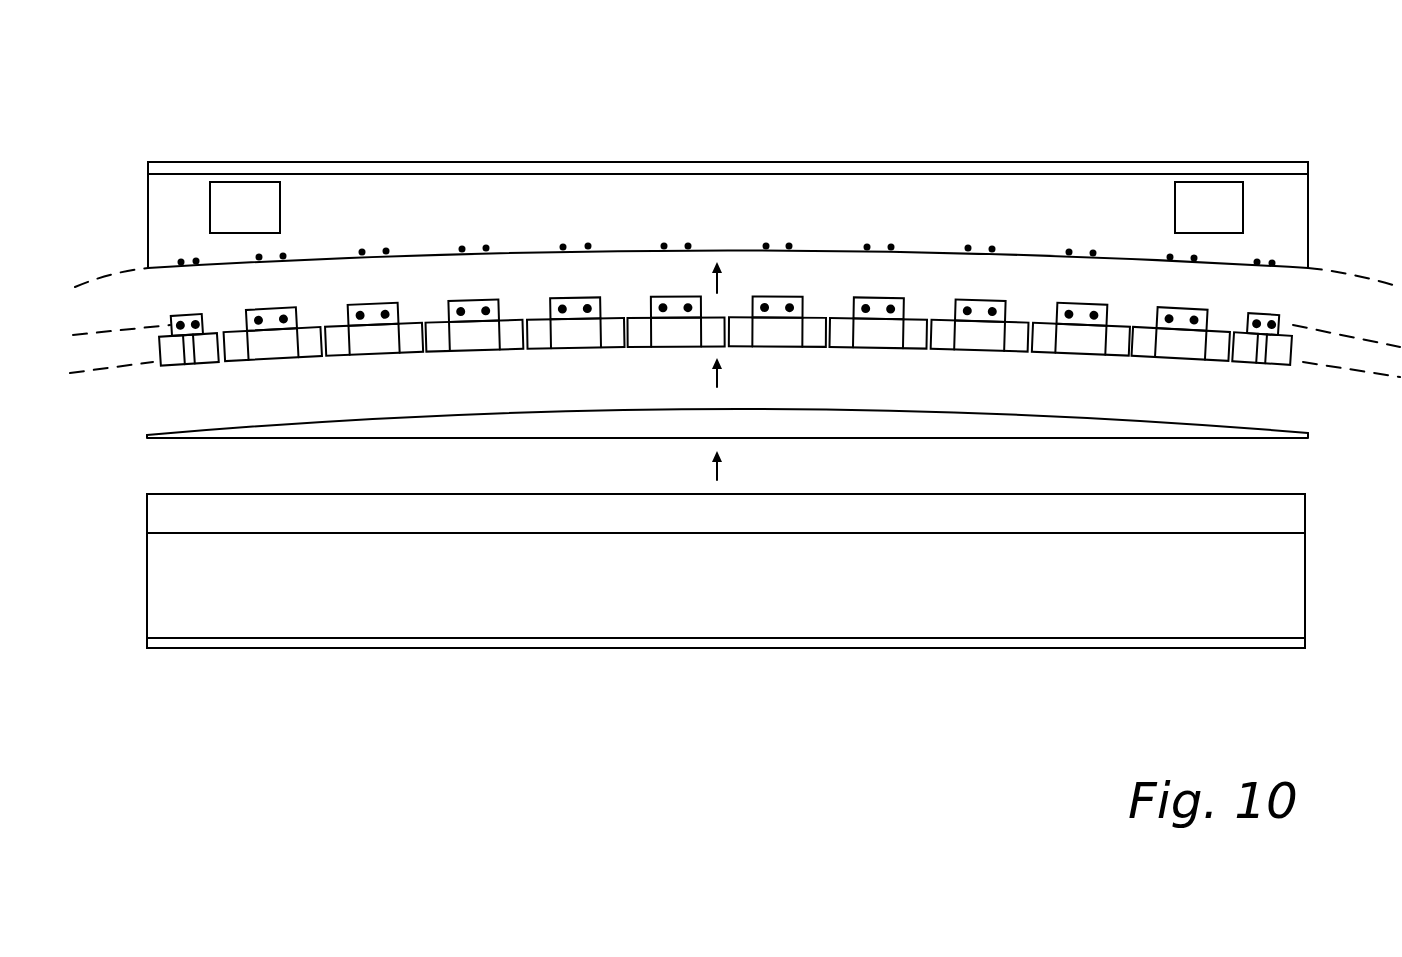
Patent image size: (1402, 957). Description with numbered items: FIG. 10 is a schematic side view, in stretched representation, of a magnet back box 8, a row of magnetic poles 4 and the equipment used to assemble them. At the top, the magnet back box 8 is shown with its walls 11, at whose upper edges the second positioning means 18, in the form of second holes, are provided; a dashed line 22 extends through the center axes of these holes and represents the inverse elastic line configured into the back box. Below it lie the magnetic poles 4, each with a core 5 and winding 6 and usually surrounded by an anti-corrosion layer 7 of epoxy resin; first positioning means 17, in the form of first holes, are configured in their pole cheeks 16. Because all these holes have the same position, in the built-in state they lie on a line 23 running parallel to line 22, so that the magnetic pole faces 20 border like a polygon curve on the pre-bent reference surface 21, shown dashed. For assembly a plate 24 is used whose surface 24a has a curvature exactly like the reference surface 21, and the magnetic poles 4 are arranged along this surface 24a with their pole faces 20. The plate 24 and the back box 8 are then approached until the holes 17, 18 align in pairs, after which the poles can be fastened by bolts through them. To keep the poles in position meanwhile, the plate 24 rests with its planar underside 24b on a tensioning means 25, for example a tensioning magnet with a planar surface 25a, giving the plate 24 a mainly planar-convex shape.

The magnetic poles 4 is at (725, 335).
The cores 5 is at (273, 353).
The windings 6 is at (282, 355).
The anti-corrosion layer 7 is at (94, 410).
The magnet back box 8 is at (470, 152).
The walls 11 is at (323, 187).
The pole cheeks 16 is at (963, 293).
The first positioning means 17 is at (922, 285).
The second positioning means 18 is at (891, 245).
The magnetic pole faces 20 is at (889, 363).
The reference surface 21 is at (735, 415).
The line 22 is at (99, 265).
The line 23 is at (110, 330).
The plate 24 is at (761, 445).
The surface 24a is at (1243, 424).
The underside 24b is at (990, 446).
The tensioning means 25 is at (774, 604).
The planar surface 25a is at (1282, 493).